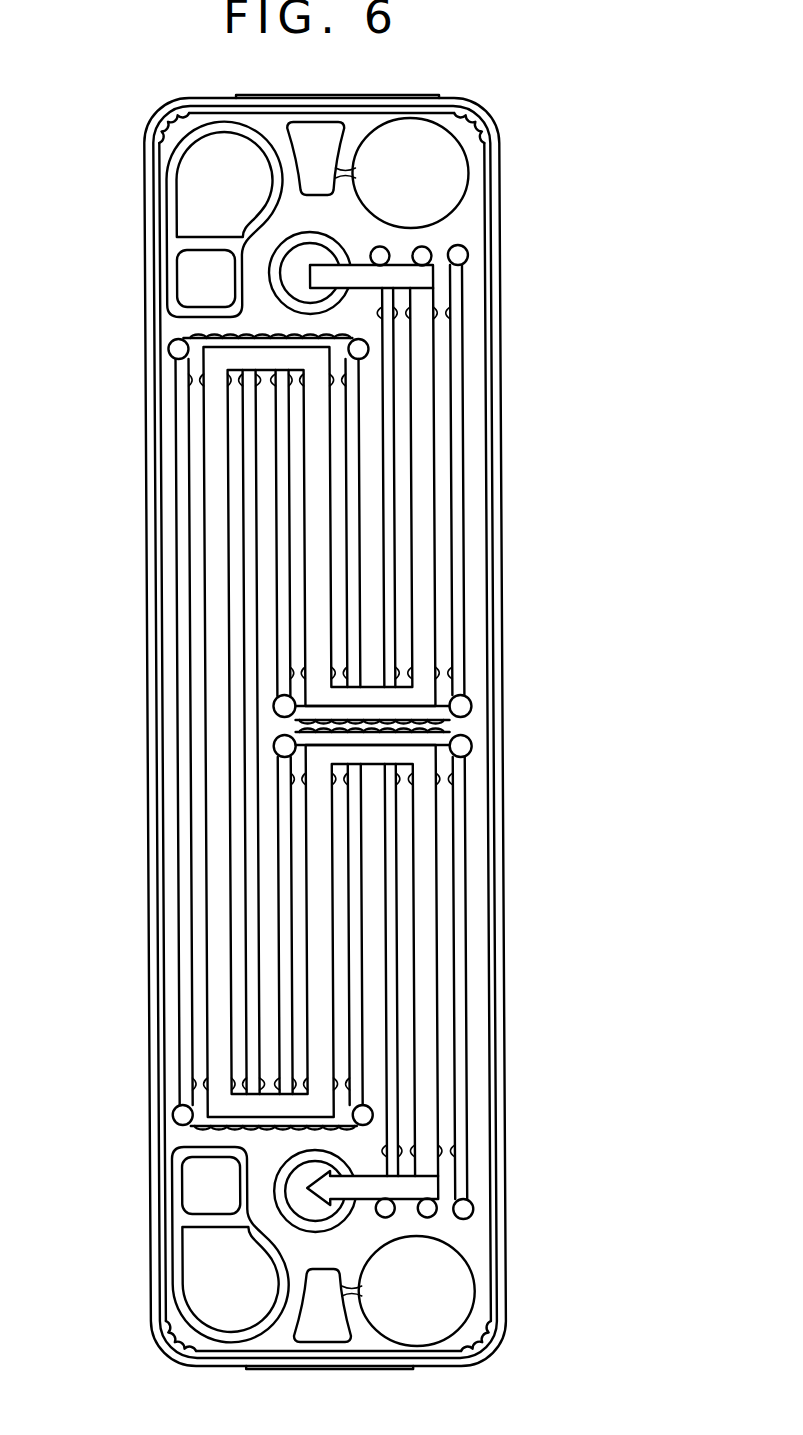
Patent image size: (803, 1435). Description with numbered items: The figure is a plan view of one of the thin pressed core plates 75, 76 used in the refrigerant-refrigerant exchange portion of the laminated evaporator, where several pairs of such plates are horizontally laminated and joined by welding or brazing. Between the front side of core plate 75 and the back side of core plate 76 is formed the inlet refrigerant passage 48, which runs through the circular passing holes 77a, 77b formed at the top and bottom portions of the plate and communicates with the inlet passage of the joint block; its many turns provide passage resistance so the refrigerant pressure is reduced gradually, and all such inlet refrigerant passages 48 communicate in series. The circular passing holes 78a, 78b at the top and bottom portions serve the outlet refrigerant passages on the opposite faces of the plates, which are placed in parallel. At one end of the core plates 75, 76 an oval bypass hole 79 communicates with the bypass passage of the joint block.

The core plate 75 is at (490, 110).
The core plate 76 is at (398, 715).
The circular passing hole 77a is at (318, 262).
The circular passing hole 77b is at (345, 1172).
The circular passing hole 78a is at (437, 180).
The circular passing hole 78b is at (457, 1288).
The oval bypass hole 79 is at (197, 177).
The inlet refrigerant passage 48 is at (440, 536).